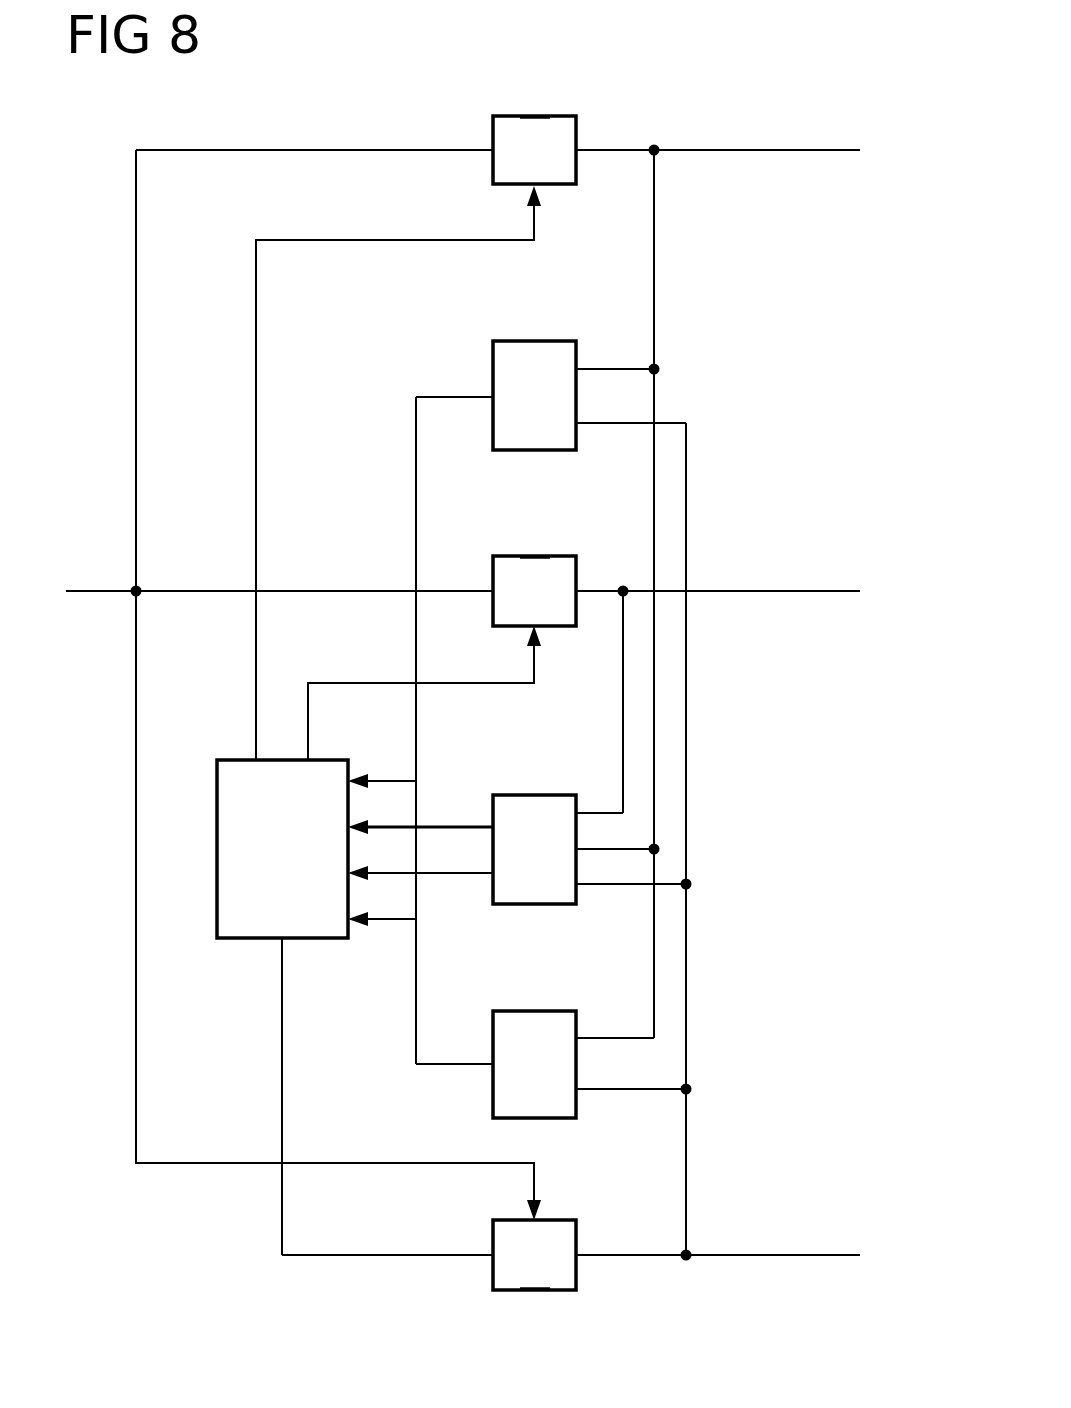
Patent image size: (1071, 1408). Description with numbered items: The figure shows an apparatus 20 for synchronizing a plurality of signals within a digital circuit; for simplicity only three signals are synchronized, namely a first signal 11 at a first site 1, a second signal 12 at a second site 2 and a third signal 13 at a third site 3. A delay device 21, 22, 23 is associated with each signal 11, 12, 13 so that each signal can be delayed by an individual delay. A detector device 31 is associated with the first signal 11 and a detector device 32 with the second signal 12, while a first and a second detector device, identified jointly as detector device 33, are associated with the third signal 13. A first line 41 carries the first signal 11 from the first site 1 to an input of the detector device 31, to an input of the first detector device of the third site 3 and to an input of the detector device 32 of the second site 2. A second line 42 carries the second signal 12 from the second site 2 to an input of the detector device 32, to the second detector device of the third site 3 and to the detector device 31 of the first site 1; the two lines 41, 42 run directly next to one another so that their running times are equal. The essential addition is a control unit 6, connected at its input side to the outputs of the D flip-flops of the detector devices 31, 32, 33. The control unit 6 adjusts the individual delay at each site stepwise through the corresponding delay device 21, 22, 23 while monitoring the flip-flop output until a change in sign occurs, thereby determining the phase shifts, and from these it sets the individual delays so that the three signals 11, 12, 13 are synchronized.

The apparatus 20 is at (745, 95).
The first site 1 is at (712, 277).
The second site 2 is at (720, 1143).
The third site 3 is at (720, 696).
The control unit 6 is at (215, 848).
The first signal 11 is at (578, 142).
The second signal 12 is at (578, 1248).
The third signal 13 is at (578, 583).
The delay device 21 is at (533, 114).
The delay device 22 is at (533, 1292).
The delay device 23 is at (533, 554).
The detector device 31 is at (533, 339).
The detector device 32 is at (533, 1009).
The detector device 33 is at (535, 793).
The first line 41 is at (656, 232).
The second line 42 is at (688, 990).